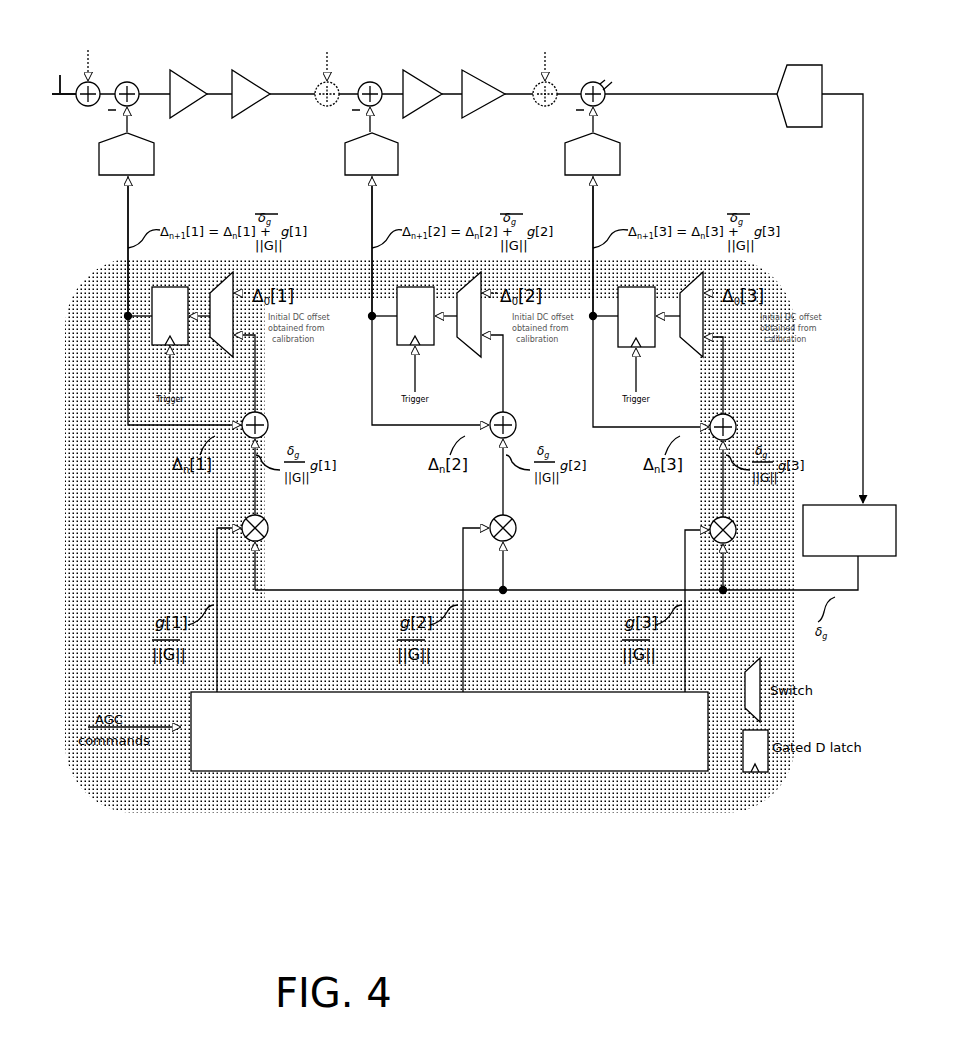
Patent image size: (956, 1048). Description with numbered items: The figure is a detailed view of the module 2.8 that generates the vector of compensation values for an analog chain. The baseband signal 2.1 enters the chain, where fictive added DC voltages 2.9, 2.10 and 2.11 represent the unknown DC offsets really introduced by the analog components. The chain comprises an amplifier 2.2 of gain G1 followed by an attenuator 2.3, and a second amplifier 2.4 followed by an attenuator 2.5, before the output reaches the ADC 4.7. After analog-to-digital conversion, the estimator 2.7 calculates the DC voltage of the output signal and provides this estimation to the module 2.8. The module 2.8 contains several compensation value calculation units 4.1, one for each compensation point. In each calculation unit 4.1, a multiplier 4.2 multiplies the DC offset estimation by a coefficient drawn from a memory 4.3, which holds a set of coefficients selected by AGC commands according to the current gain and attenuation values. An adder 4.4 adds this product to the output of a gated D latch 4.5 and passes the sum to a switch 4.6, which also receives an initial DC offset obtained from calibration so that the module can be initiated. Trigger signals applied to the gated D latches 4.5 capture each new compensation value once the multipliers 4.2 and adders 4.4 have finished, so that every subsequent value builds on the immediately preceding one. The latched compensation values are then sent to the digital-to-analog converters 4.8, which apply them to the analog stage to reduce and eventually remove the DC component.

The baseband signal 2.1 is at (55, 68).
The added DC voltage 2.9 is at (95, 66).
The amplifier 2.2 is at (185, 75).
The attenuator 2.3 is at (245, 75).
The added DC voltage 2.10 is at (332, 60).
The amplifier 2.4 is at (423, 80).
The attenuator 2.5 is at (475, 82).
The added DC voltage 2.11 is at (548, 58).
The ADC 4.7 is at (787, 75).
The digital-to-analog converters 4.8 is at (154, 162).
The module 2.8 is at (277, 815).
The gated D latch 4.5 is at (170, 287).
The switch 4.6 is at (222, 282).
The adder 4.4 is at (265, 415).
The multiplier 4.2 is at (262, 538).
The memory 4.3 is at (205, 765).
The estimator 2.7 is at (882, 556).
The compensation value calculation unit 4.1 is at (113, 395).